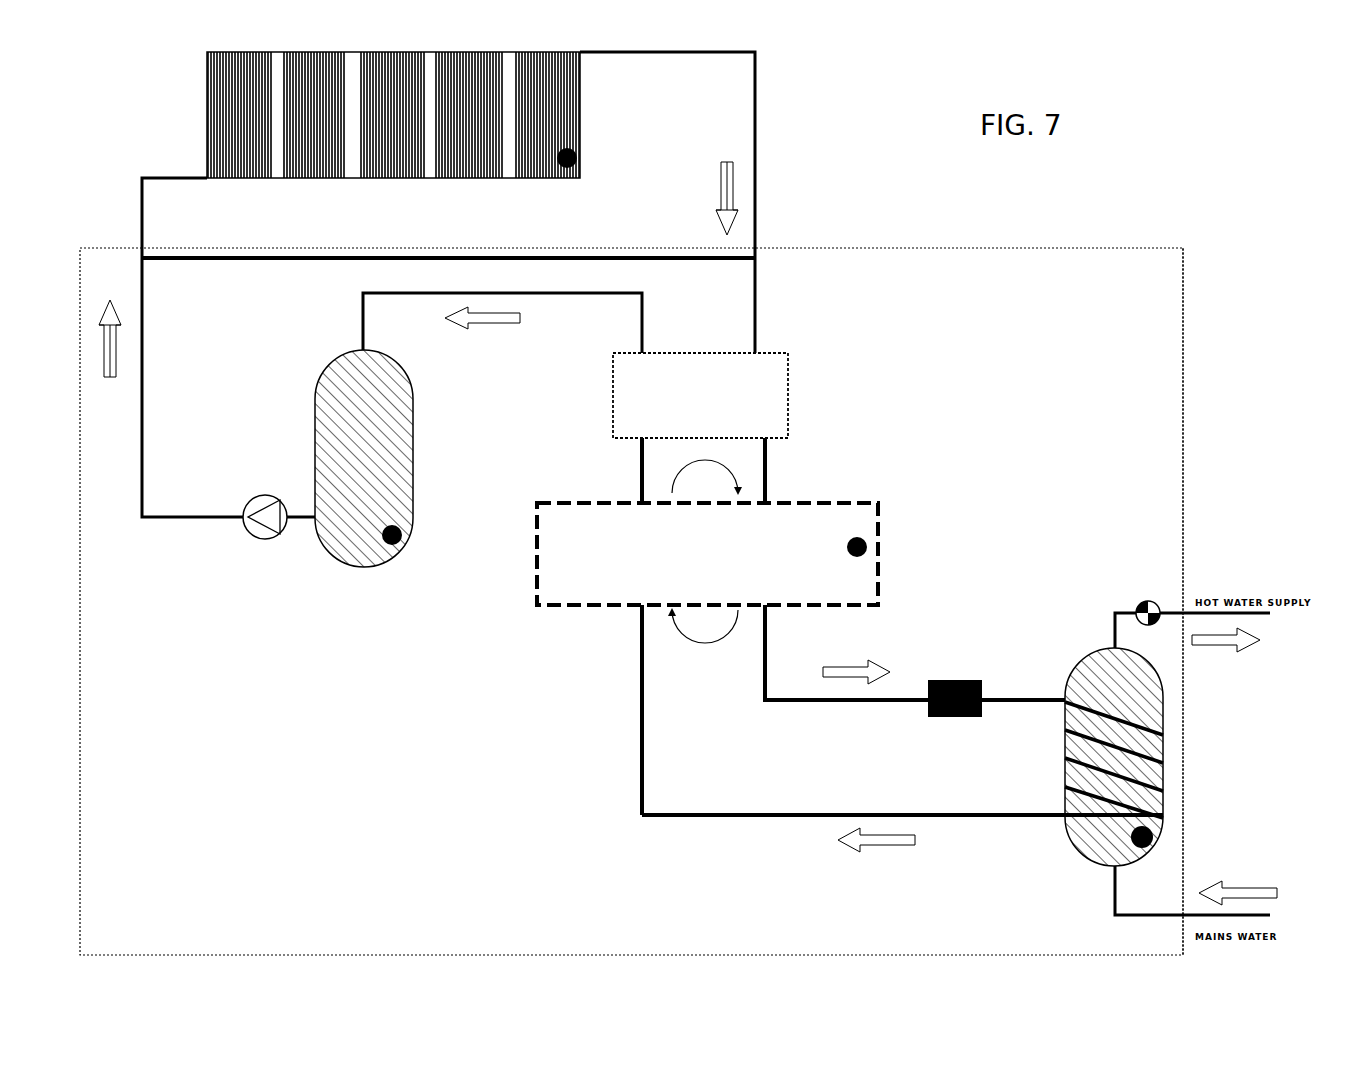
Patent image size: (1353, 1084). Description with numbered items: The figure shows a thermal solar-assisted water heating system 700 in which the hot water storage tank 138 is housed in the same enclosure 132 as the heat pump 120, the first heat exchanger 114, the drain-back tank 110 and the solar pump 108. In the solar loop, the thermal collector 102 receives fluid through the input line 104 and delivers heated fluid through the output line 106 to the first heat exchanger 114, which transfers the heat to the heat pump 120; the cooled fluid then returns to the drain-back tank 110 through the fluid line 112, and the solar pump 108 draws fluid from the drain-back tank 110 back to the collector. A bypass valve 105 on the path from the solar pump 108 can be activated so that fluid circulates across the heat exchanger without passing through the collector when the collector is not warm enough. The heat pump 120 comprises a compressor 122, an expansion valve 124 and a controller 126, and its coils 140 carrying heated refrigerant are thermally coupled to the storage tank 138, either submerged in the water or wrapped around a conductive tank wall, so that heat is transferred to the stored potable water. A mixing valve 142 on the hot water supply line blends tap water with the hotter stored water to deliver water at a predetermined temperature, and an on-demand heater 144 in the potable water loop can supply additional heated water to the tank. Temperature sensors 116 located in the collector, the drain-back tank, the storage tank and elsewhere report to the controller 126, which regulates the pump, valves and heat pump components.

The thermal solar-assisted water heating system 700 is at (1160, 240).
The thermal collector 102 is at (207, 105).
The input line 104 is at (142, 325).
The bypass valve 105 is at (250, 262).
The output line 106 is at (755, 120).
The solar pump 108 is at (247, 506).
The drain-back tank 110 is at (413, 398).
The fluid line 112 is at (363, 327).
The first heat exchanger 114 is at (613, 410).
The temperature sensor 116 is at (567, 158).
The heat pump 120 is at (537, 570).
The compressor 122 is at (715, 645).
The expansion valve 124 is at (715, 645).
The controller 126 is at (715, 645).
The enclosure 132 is at (1183, 480).
The hot water storage tank 138 is at (1163, 712).
The coils 140 is at (1163, 775).
The mixing valve 142 is at (1140, 605).
The on-demand heater 144 is at (936, 715).